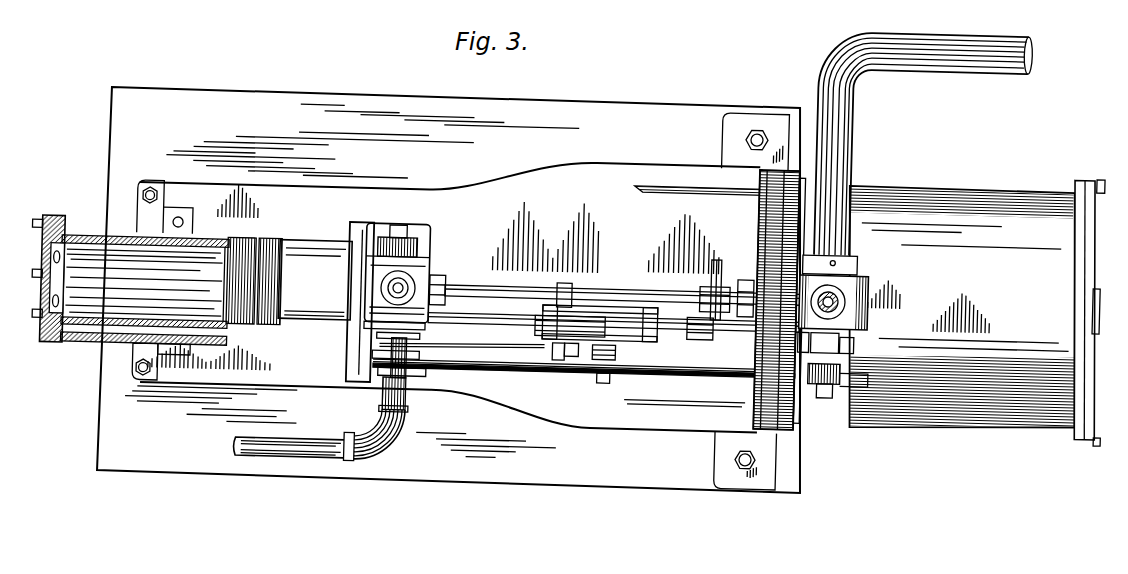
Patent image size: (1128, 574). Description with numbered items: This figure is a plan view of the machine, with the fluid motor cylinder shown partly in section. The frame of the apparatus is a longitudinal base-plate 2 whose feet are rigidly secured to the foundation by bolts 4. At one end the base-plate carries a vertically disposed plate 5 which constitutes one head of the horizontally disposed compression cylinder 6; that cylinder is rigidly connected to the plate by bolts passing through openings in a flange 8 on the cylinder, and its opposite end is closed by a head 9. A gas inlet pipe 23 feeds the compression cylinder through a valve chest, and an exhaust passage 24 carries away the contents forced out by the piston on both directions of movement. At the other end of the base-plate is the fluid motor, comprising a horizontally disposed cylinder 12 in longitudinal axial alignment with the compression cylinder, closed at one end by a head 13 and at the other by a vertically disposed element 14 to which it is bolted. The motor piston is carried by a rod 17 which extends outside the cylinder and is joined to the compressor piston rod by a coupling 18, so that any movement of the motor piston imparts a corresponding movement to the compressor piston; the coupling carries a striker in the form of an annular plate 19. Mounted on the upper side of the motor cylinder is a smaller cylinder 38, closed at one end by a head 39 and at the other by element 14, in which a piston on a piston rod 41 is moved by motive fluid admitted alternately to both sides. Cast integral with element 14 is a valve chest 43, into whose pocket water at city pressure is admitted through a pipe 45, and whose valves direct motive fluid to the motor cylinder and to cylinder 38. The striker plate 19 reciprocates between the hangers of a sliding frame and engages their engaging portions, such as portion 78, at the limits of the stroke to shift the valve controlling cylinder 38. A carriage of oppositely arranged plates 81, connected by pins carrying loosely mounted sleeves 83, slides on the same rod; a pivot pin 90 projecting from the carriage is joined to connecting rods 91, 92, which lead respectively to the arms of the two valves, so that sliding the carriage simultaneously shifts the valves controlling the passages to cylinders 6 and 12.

The base-plate 2 is at (450, 291).
The bolts 4 is at (142, 377).
The plate 5 is at (766, 213).
The compression cylinder 6 is at (957, 180).
The flange 8 is at (923, 155).
The head 9 is at (1090, 312).
The cylinder 12 is at (204, 252).
The head 13 is at (41, 296).
The element 14 is at (359, 241).
The rod 17 is at (650, 307).
The coupling 18 is at (698, 288).
The annular plate 19 is at (721, 258).
The inlet pipe 23 is at (870, 292).
The exhaust passage 24 is at (832, 390).
The cylinder 38 is at (311, 271).
The head 39 is at (259, 265).
The piston rod 41 is at (492, 296).
The valve chest 43 is at (418, 276).
The pipe 45 is at (428, 290).
The engaging portion 78 is at (711, 336).
The plates 81 is at (607, 306).
The sleeve 83 is at (545, 304).
The pivot pin 90 is at (597, 376).
The connecting rod 91 is at (502, 370).
The connecting rod 92 is at (707, 368).